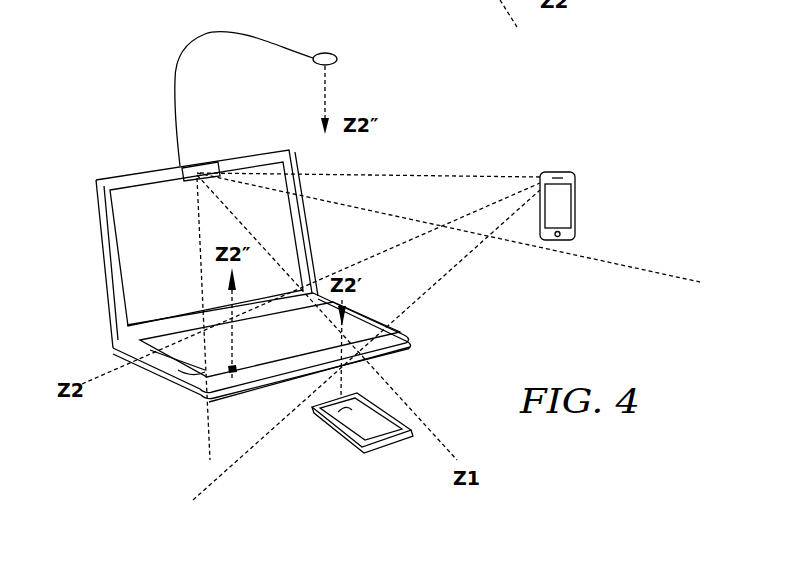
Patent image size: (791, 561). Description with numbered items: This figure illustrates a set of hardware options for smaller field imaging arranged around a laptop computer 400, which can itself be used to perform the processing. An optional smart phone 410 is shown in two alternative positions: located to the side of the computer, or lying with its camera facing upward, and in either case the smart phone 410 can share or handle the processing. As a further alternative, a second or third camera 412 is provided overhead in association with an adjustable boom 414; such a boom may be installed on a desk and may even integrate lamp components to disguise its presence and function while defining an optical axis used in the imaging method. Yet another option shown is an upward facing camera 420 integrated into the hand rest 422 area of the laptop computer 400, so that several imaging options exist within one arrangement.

The laptop computer 400 is at (112, 140).
The smart phone 410 is at (576, 207).
The camera 412 is at (337, 60).
The adjustable boom 414 is at (257, 38).
The upward facing camera 420 is at (234, 376).
The hand rest 422 is at (182, 374).